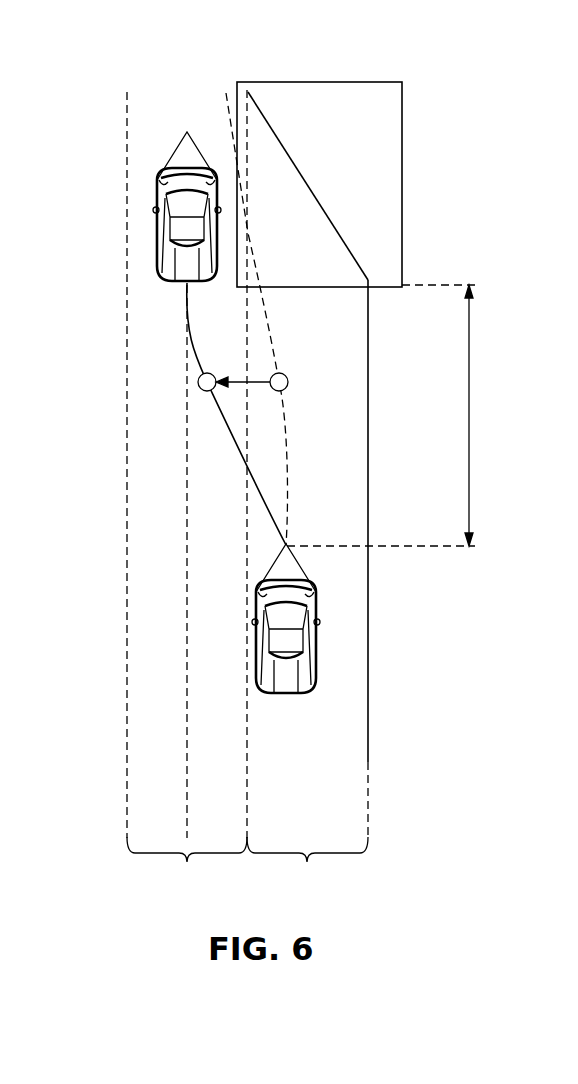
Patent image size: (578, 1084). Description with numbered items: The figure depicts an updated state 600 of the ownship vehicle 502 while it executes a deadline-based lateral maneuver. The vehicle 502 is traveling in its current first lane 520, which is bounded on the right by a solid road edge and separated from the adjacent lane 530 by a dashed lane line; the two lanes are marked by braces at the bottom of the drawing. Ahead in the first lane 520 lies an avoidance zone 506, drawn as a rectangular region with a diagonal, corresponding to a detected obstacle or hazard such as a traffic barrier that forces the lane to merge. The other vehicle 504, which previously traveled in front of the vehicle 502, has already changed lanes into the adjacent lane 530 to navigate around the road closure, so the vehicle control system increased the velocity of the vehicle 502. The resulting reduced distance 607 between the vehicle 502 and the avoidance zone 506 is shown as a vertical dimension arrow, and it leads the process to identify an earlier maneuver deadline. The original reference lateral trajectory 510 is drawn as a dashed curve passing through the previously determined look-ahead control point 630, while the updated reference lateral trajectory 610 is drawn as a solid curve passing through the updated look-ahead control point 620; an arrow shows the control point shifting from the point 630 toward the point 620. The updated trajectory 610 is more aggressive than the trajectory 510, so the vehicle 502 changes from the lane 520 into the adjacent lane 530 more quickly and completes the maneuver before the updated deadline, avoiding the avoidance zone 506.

The updated state 600 is at (130, 76).
The vehicle 502 is at (313, 643).
The other vehicle 504 is at (157, 208).
The avoidance zone 506 is at (402, 189).
The reference lateral trajectory 510 is at (267, 327).
The first lane 520 is at (307, 496).
The adjacent lane 530 is at (187, 594).
The reduced distance 607 is at (470, 417).
The updated reference lateral trajectory 610 is at (236, 438).
The updated look-ahead control point 620 is at (197, 382).
The previously determined look-ahead control point 630 is at (289, 382).